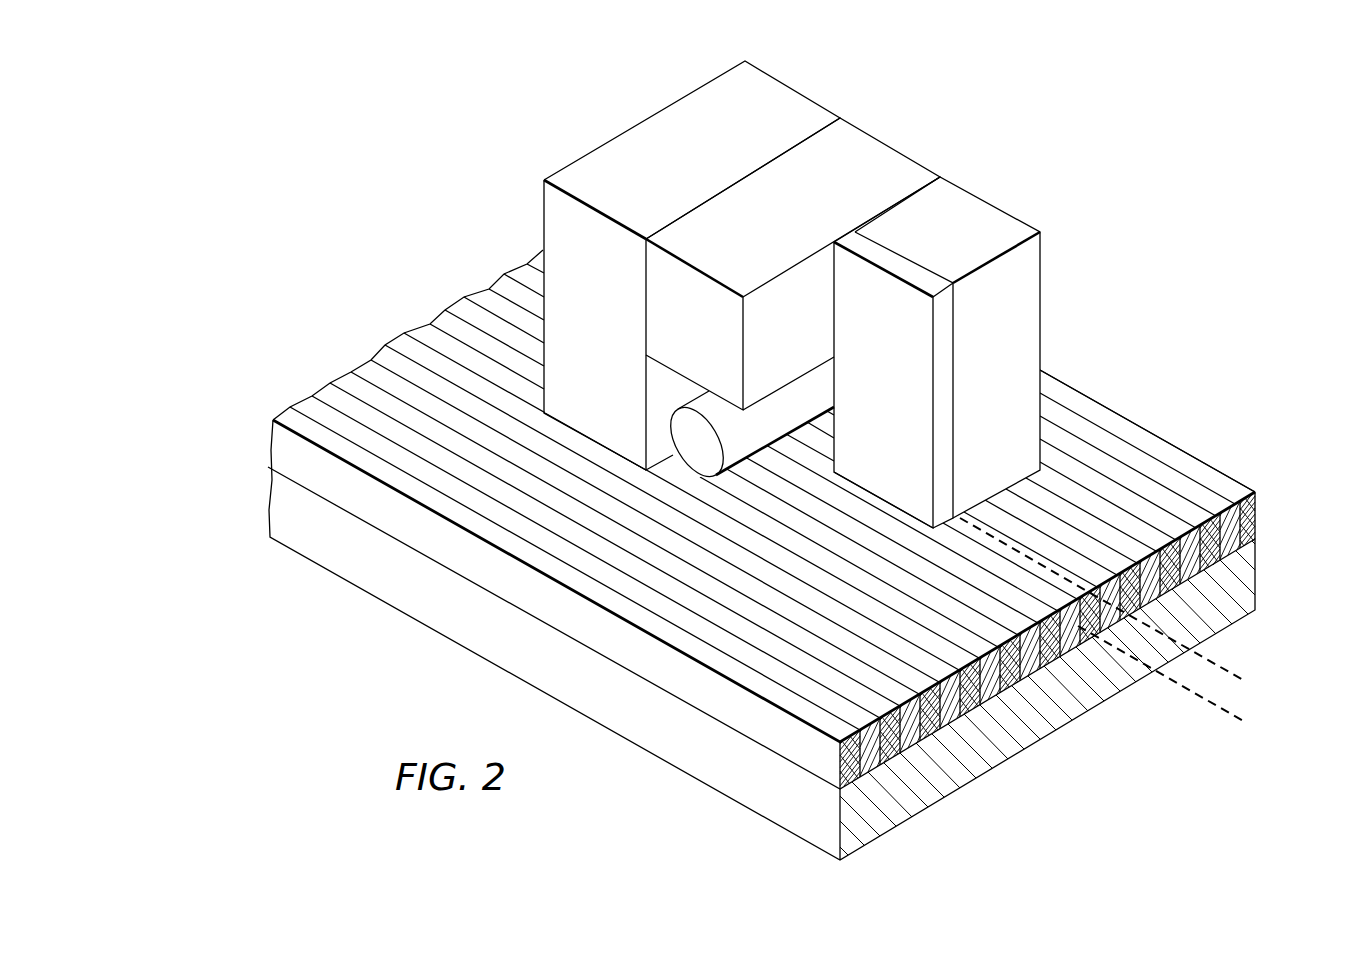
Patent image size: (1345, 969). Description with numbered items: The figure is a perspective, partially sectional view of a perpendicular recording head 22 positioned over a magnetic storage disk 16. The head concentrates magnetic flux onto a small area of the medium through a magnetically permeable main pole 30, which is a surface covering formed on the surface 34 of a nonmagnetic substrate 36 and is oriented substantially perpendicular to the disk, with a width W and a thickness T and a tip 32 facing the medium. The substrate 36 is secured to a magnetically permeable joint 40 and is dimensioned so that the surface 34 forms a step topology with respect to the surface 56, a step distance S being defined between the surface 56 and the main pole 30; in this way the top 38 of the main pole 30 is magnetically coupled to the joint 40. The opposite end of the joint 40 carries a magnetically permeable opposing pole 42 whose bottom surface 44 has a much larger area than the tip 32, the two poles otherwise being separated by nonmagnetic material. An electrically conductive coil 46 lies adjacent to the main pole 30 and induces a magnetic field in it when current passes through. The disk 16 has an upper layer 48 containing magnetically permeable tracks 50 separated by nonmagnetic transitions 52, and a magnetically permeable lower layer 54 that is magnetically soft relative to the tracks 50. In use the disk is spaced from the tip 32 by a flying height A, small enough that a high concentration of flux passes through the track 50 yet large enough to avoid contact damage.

The magnetic storage disk 16 is at (1207, 412).
The perpendicular recording head 22 is at (1084, 176).
The main pole 30 is at (866, 399).
The tip 32 is at (853, 493).
The surface 34 is at (951, 386).
The nonmagnetic substrate 36 is at (984, 371).
The top 38 is at (866, 314).
The joint 40 is at (779, 214).
The opposing pole 42 is at (574, 290).
The bottom surface 44 is at (608, 451).
The coil 46 is at (683, 455).
The upper layer 48 is at (249, 442).
The tracks 50 is at (1223, 482).
The nonmagnetic transitions 52 is at (1127, 447).
The lower layer 54 is at (1254, 566).
The surface 56 is at (676, 337).
The flying height A is at (1228, 684).
The step distance S is at (825, 307).
The thickness T is at (847, 416).
The width W is at (897, 348).